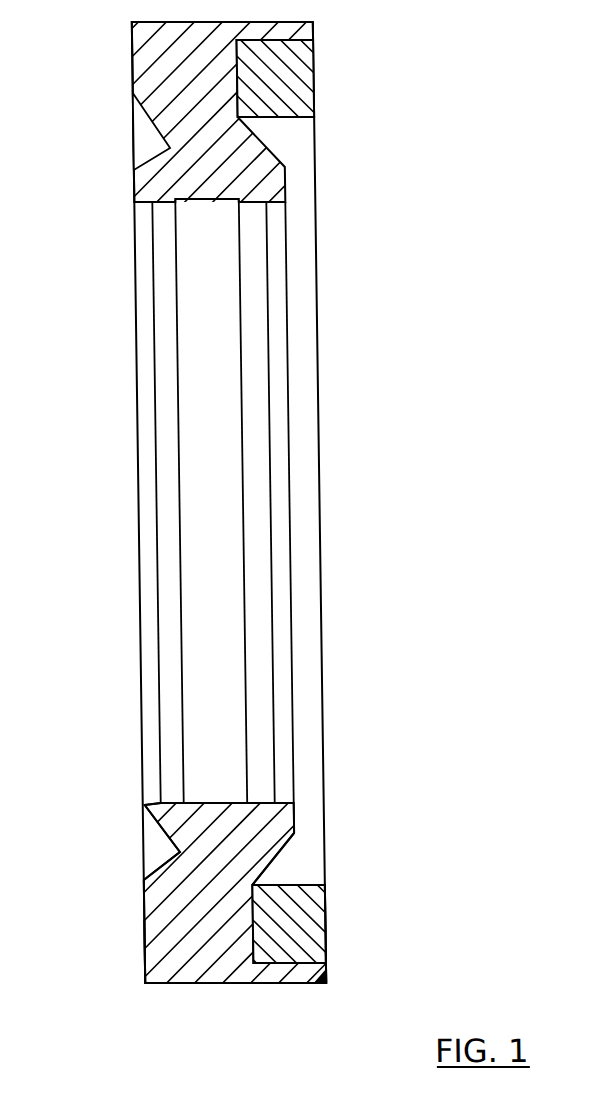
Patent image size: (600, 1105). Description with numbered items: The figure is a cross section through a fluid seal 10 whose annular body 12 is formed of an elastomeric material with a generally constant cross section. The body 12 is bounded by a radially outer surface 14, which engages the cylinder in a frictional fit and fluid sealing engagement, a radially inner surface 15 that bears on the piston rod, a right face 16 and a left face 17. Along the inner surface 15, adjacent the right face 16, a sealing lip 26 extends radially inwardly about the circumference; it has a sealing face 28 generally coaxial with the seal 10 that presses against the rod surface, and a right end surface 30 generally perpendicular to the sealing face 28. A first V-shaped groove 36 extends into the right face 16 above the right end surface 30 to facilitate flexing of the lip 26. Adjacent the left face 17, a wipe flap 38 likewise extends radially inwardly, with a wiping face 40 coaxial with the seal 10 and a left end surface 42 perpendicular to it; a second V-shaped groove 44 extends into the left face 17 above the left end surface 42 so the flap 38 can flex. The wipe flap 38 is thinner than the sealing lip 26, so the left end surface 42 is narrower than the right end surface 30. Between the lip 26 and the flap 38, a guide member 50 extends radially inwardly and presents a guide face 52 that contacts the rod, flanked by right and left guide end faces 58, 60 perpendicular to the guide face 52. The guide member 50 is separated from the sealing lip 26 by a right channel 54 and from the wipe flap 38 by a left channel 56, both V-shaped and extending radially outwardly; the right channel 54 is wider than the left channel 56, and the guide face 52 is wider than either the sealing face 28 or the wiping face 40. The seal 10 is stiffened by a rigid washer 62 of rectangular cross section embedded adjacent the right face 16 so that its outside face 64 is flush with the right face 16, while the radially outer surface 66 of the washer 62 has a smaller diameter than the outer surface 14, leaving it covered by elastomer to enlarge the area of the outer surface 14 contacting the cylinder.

The fluid seal 10 is at (432, 636).
The annular body 12 is at (95, 938).
The radially outer surface 14 is at (211, 985).
The radially inner surface 15 is at (179, 786).
The right face 16 is at (340, 968).
The left face 17 is at (122, 982).
The sealing lip 26 is at (274, 807).
The sealing face 28 is at (267, 208).
The right end surface 30 is at (284, 823).
The first V-shaped groove 36 is at (246, 857).
The wipe flap 38 is at (149, 803).
The wiping face 40 is at (147, 205).
The left end surface 42 is at (138, 822).
The second V-shaped groove 44 is at (155, 868).
The guide member 50 is at (194, 815).
The guide face 52 is at (239, 810).
The right channel 54 is at (238, 199).
The left channel 56 is at (160, 208).
The right guide end face 58 is at (251, 812).
The left guide end face 60 is at (174, 805).
The washer 62 is at (297, 946).
The outside face 64 is at (312, 912).
The radially outer surface of the washer 66 is at (299, 984).